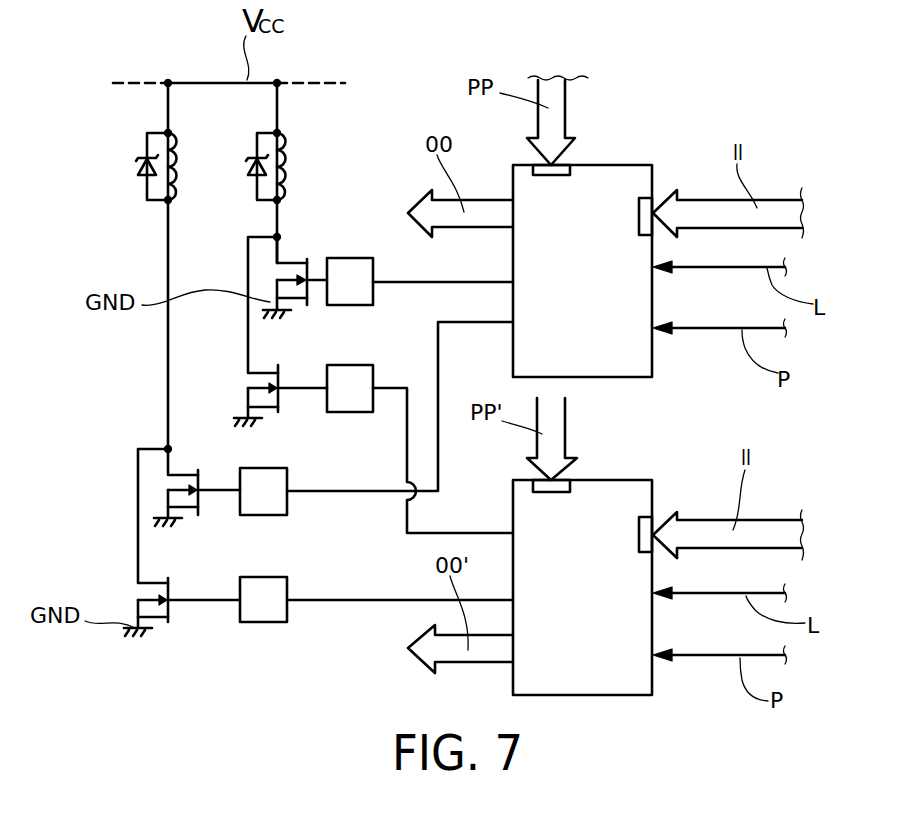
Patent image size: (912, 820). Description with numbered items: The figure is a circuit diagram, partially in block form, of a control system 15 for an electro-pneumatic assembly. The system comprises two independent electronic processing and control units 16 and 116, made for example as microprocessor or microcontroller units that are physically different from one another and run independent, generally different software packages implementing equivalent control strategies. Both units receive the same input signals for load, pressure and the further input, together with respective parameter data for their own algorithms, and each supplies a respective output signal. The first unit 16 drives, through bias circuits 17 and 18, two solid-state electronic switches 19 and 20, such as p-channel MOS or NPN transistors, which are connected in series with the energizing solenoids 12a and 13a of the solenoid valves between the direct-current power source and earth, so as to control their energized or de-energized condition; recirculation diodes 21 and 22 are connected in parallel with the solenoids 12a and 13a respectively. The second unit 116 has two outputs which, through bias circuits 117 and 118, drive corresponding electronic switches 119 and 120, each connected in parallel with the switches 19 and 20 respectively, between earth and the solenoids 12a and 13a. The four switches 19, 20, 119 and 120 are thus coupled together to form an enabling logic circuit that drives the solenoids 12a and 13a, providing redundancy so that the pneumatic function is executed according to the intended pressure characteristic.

The control system 15 is at (696, 136).
The energizing solenoid 13a is at (173, 172).
The energizing solenoid 12a is at (283, 164).
The recirculation diode 22 is at (136, 160).
The recirculation diode 21 is at (242, 164).
The electronic switch 19 is at (288, 262).
The bias circuit 17 is at (348, 257).
The electronic switch 119 is at (288, 377).
The bias circuit 117 is at (356, 368).
The electronic switch 20 is at (183, 472).
The bias circuit 18 is at (266, 470).
The electronic switch 120 is at (163, 583).
The bias circuit 118 is at (268, 577).
The electronic processing and control unit 16 is at (613, 168).
The electronic processing and control unit 116 is at (612, 490).